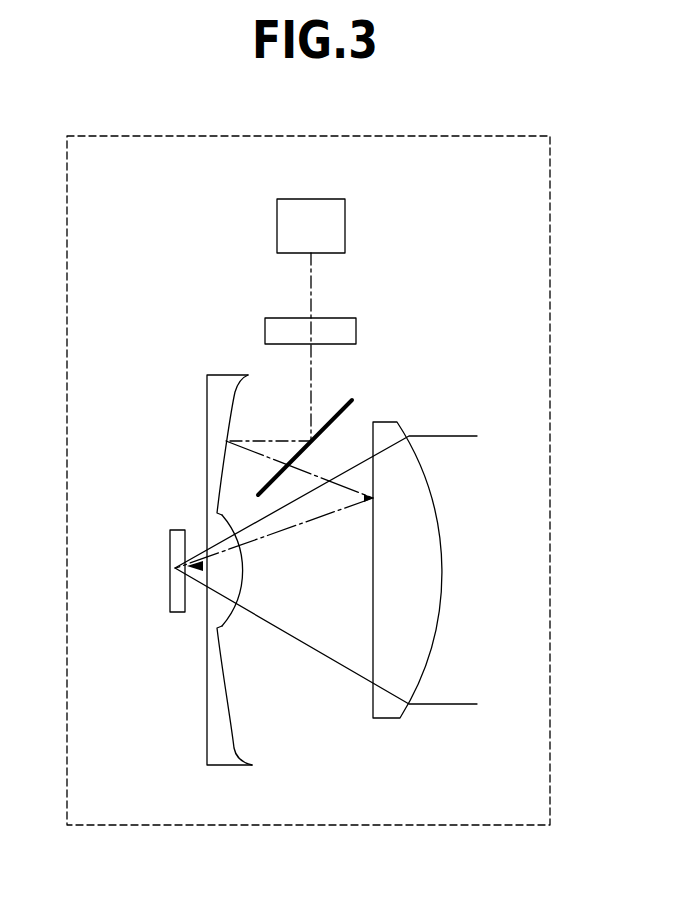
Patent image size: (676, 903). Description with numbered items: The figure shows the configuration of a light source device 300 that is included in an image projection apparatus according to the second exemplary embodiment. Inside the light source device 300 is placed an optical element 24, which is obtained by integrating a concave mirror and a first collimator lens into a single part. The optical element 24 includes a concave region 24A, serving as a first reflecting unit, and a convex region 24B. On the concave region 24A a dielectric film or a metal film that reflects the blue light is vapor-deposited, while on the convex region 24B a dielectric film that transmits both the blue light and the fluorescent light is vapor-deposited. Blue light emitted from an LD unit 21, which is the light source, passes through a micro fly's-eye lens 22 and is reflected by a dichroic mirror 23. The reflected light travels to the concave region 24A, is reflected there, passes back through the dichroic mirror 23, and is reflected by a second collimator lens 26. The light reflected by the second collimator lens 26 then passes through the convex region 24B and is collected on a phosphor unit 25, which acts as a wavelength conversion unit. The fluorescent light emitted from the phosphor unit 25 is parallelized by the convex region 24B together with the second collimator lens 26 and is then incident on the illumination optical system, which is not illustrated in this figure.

The LD unit 21 is at (277, 221).
The micro fly's-eye lens 22 is at (339, 318).
The dichroic mirror 23 is at (352, 400).
The optical element 24 is at (226, 570).
The concave region 24A is at (222, 459).
The convex region 24B is at (244, 572).
The phosphor unit 25 is at (170, 551).
The second collimator lens 26 is at (383, 720).
The light source device 300 is at (323, 826).